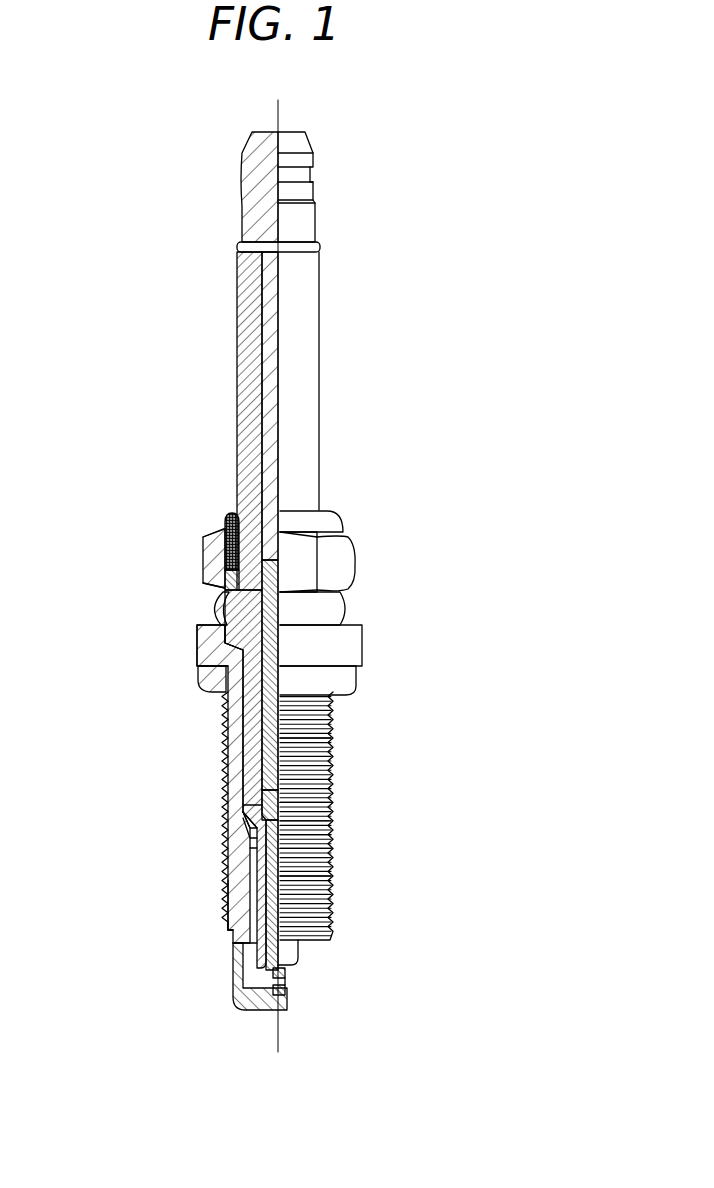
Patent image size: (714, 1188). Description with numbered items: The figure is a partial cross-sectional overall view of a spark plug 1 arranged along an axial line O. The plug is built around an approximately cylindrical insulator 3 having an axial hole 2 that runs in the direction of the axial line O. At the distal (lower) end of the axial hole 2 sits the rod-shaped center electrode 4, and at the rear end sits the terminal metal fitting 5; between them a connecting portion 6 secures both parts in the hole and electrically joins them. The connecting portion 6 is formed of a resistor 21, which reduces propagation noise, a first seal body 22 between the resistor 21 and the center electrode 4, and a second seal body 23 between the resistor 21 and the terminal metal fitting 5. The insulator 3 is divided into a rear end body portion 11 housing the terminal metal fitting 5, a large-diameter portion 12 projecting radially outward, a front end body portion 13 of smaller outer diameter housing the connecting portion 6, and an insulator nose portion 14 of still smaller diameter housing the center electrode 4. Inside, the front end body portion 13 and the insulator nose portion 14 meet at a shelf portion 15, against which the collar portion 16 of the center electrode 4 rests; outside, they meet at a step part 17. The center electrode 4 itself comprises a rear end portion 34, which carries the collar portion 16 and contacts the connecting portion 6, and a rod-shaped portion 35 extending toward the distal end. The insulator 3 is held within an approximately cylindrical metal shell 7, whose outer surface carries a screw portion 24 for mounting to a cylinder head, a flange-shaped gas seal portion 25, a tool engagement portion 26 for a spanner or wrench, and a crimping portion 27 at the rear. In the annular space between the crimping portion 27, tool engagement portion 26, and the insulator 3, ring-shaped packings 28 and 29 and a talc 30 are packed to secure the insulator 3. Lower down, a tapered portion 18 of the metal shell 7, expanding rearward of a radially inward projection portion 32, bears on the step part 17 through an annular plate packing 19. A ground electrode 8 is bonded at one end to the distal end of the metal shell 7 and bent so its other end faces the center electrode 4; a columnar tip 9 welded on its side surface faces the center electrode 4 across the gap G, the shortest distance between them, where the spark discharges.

The spark plug 1 is at (392, 472).
The axial line O is at (278, 122).
The axial hole 2 is at (222, 725).
The insulator 3 is at (232, 872).
The center electrode 4 is at (288, 977).
The terminal metal fitting 5 is at (244, 210).
The connecting portion 6 is at (497, 623).
The metal shell 7 is at (222, 900).
The ground electrode 8 is at (262, 1011).
The tip 9 is at (270, 990).
The rear end body portion 11 is at (237, 368).
The large-diameter portion 12 is at (218, 606).
The front end body portion 13 is at (222, 760).
The insulator nose portion 14 is at (228, 931).
The shelf portion 15 is at (244, 817).
The collar portion 16 is at (243, 805).
The step part 17 is at (331, 835).
The tapered portion 18 is at (250, 838).
The plate packing 19 is at (250, 828).
The resistor 21 is at (331, 738).
The first seal body 22 is at (331, 805).
The second seal body 23 is at (345, 600).
The screw portion 24 is at (331, 850).
The gas seal portion 25 is at (358, 651).
The tool engagement portion 26 is at (352, 556).
The crimping portion 27 is at (341, 523).
The ring-shaped packing 28 is at (232, 513).
The ring-shaped packing 29 is at (212, 560).
The talc 30 is at (214, 532).
The projection portion 32 is at (250, 848).
The rear end portion 34 is at (331, 820).
The rod-shaped portion 35 is at (331, 878).
The gap G is at (288, 990).